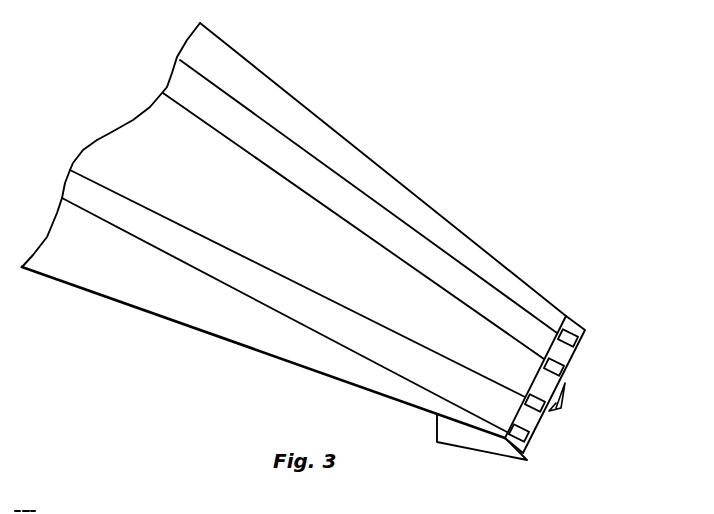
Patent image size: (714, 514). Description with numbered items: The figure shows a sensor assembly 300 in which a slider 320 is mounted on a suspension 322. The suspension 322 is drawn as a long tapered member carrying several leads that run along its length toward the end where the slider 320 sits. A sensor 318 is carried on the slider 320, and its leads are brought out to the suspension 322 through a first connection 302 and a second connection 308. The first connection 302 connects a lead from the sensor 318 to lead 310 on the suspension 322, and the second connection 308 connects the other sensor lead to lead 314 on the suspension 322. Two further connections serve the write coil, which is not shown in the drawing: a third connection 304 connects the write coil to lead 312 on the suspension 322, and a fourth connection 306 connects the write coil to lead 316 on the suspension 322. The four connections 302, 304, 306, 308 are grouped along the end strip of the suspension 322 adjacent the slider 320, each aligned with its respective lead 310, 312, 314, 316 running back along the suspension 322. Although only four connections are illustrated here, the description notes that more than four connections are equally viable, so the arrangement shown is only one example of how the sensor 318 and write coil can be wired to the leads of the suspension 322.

The sensor assembly 300 is at (160, 382).
The first connection 302 is at (513, 442).
The third connection 304 is at (540, 415).
The fourth connection 306 is at (553, 358).
The second connection 308 is at (584, 331).
The lead 310 is at (259, 296).
The lead 312 is at (387, 326).
The lead 314 is at (438, 247).
The lead 316 is at (500, 295).
The sensor 318 is at (562, 393).
The slider 320 is at (467, 440).
The suspension 322 is at (378, 393).